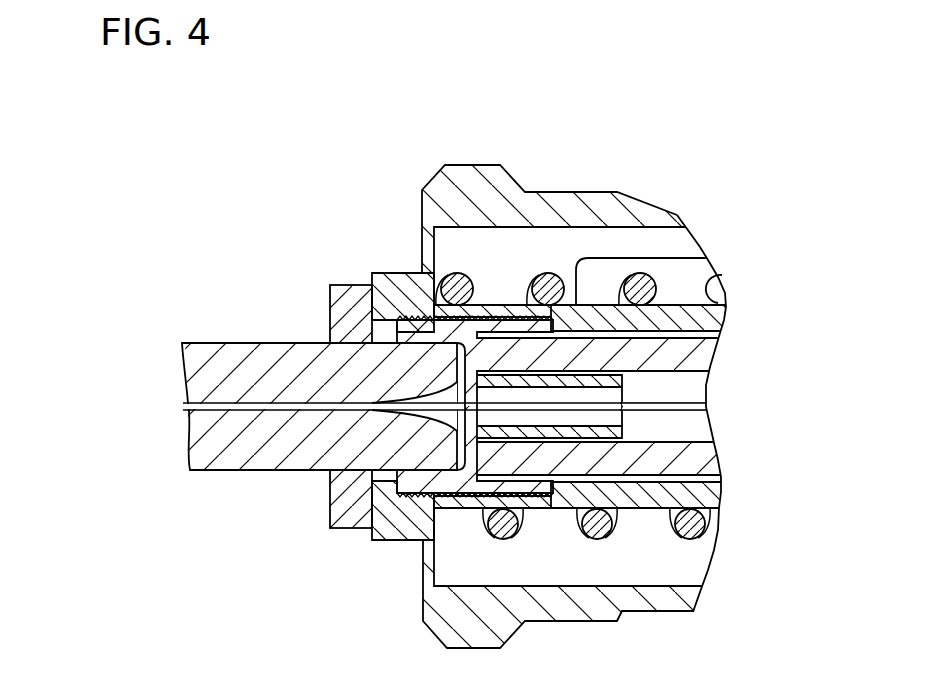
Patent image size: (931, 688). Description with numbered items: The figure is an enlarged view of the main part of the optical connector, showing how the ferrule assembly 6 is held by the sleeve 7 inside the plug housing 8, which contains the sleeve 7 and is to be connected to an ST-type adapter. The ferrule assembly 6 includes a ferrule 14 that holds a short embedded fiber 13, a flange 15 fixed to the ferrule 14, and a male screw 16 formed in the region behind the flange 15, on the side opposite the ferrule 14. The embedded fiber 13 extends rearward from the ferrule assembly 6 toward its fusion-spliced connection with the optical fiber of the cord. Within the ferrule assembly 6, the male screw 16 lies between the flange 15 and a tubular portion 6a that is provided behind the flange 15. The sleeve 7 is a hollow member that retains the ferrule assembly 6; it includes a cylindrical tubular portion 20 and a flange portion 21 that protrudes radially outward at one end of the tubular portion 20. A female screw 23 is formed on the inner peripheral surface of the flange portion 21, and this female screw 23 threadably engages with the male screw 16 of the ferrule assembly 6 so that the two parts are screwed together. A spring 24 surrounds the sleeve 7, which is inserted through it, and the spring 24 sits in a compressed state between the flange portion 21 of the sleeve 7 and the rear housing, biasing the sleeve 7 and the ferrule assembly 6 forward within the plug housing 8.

The ferrule assembly 6 is at (277, 343).
The tubular portion 6a is at (622, 385).
The sleeve 7 is at (367, 425).
The plug housing 8 is at (466, 178).
The embedded fiber 13 is at (252, 412).
The ferrule 14 is at (212, 358).
The flange 15 is at (352, 297).
The male screw 16 is at (420, 498).
The tubular portion 20 is at (635, 495).
The flange portion 21 is at (392, 534).
The female screw 23 is at (533, 496).
The spring 24 is at (551, 278).